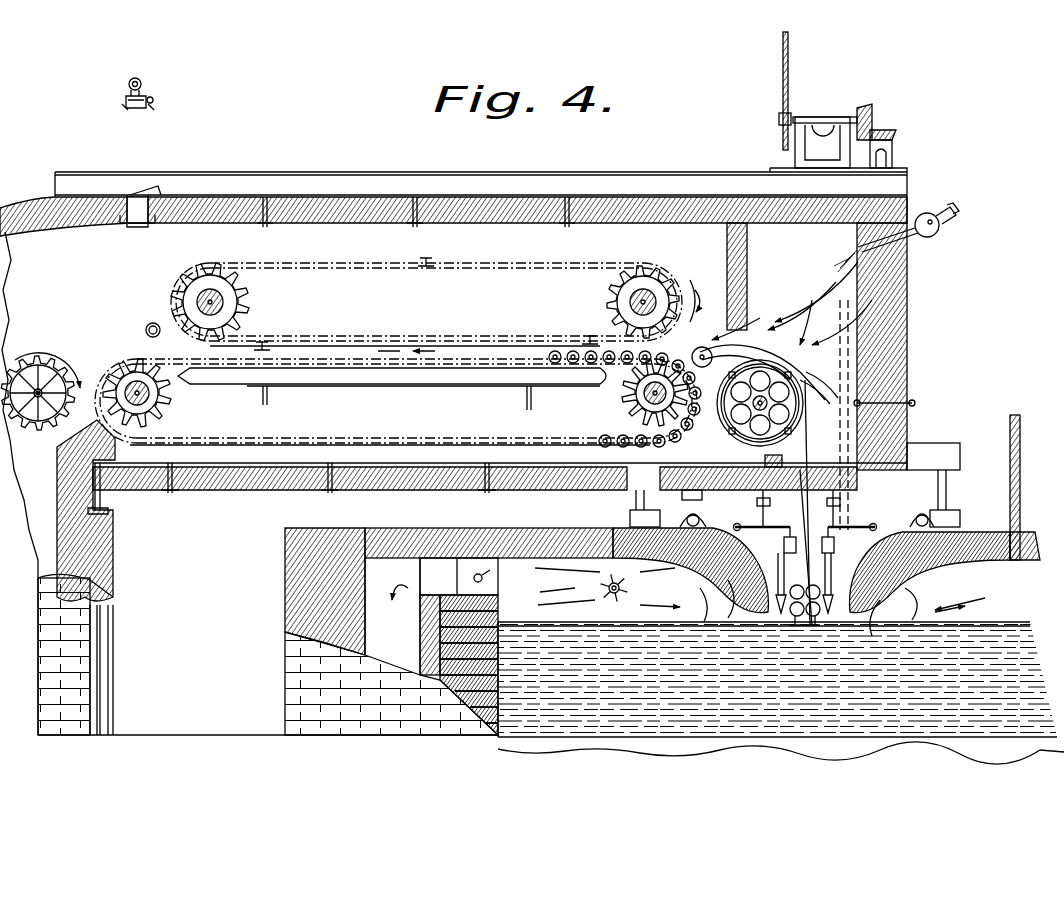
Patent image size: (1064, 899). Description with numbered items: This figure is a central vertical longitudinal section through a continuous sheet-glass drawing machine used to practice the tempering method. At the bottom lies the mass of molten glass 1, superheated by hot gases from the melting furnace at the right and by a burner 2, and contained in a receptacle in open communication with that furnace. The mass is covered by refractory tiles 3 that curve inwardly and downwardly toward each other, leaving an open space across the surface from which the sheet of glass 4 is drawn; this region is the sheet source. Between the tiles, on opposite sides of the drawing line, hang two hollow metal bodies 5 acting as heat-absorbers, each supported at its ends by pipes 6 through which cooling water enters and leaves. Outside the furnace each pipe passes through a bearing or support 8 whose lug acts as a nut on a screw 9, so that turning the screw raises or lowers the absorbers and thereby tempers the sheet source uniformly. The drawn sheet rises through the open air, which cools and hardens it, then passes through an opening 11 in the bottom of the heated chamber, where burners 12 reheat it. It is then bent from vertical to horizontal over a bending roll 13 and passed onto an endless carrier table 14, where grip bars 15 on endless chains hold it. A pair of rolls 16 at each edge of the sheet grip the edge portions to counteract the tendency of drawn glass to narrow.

The mass of molten glass 1 is at (1000, 628).
The burner 2 is at (626, 590).
The tile 3 is at (992, 580).
The sheet of glass 4 is at (808, 424).
The hollow body 5 is at (840, 578).
The pipe 6 is at (836, 544).
The bearing or support 8 is at (845, 503).
The screw 9 is at (860, 520).
The opening 11 is at (806, 488).
The burner 12 is at (830, 398).
The bending roll 13 is at (732, 432).
The endless carrier table 14 is at (630, 410).
The grip bar 15 is at (590, 338).
The roll 16 is at (800, 620).